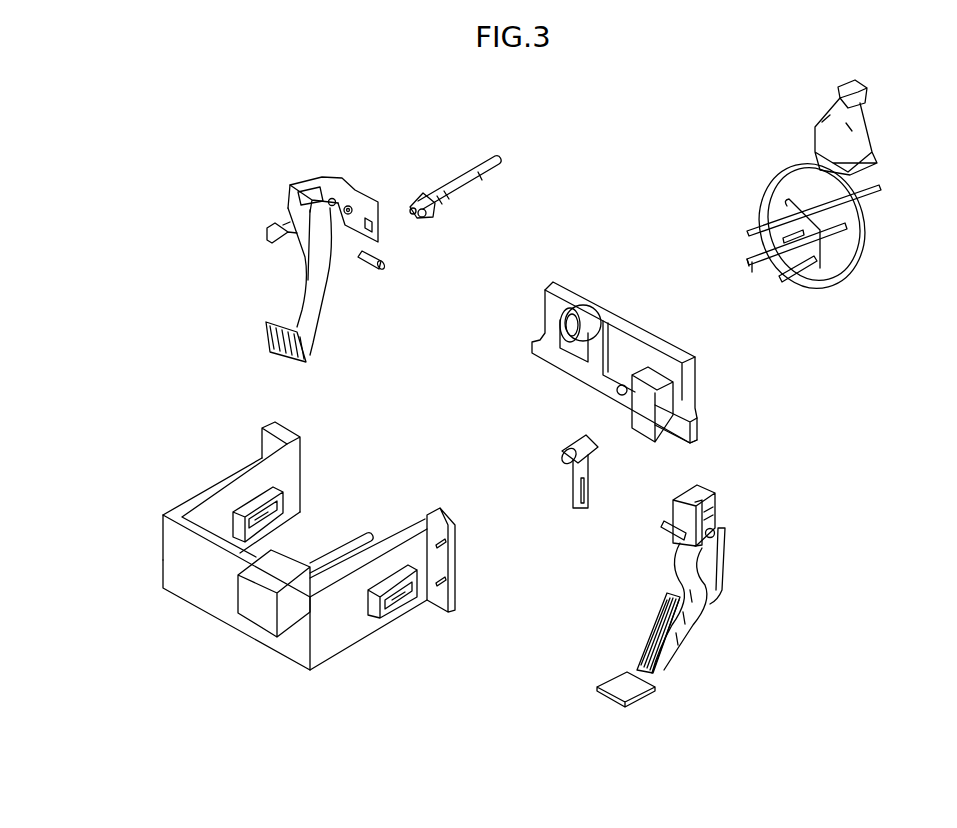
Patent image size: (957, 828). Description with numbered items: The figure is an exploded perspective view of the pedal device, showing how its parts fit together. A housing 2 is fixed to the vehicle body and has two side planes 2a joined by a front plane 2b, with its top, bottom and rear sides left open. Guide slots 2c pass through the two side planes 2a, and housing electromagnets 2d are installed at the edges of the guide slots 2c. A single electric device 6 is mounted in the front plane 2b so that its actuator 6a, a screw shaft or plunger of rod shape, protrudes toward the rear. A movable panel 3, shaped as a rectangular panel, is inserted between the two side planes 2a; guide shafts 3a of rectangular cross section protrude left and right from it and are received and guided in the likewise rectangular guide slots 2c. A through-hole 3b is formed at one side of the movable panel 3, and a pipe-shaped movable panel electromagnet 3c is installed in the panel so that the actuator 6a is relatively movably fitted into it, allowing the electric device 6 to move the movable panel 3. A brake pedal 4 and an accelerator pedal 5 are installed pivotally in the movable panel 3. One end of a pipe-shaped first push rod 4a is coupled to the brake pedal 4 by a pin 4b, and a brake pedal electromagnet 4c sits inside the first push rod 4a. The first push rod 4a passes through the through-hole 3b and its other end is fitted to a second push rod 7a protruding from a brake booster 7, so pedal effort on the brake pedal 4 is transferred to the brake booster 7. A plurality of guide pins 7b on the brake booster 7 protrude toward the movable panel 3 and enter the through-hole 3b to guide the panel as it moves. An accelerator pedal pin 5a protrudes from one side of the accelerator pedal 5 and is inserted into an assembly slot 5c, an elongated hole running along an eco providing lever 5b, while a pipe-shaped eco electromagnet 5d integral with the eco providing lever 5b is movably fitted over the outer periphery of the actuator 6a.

The housing 2 is at (213, 470).
The side planes 2a is at (197, 498).
The front plane 2b is at (220, 588).
The guide slots 2c is at (251, 511).
The housing electromagnets 2d is at (288, 513).
The movable panel 3 is at (613, 317).
The guide shafts 3a is at (528, 332).
The through-hole 3b is at (571, 311).
The movable panel electromagnet 3c is at (617, 392).
The brake pedal 4 is at (307, 291).
The first push rod 4a is at (502, 157).
The pin 4b is at (383, 270).
The brake pedal electromagnet 4c is at (452, 178).
The accelerator pedal 5 is at (713, 587).
The accelerator pedal pin 5a is at (676, 540).
The eco providing lever 5b is at (572, 487).
The assembly slot 5c is at (588, 485).
The eco electromagnet 5d is at (575, 448).
The electric device 6 is at (263, 608).
The actuator 6a is at (337, 556).
The brake booster 7 is at (837, 152).
The second push rod 7a is at (760, 260).
The guide pins 7b is at (812, 237).